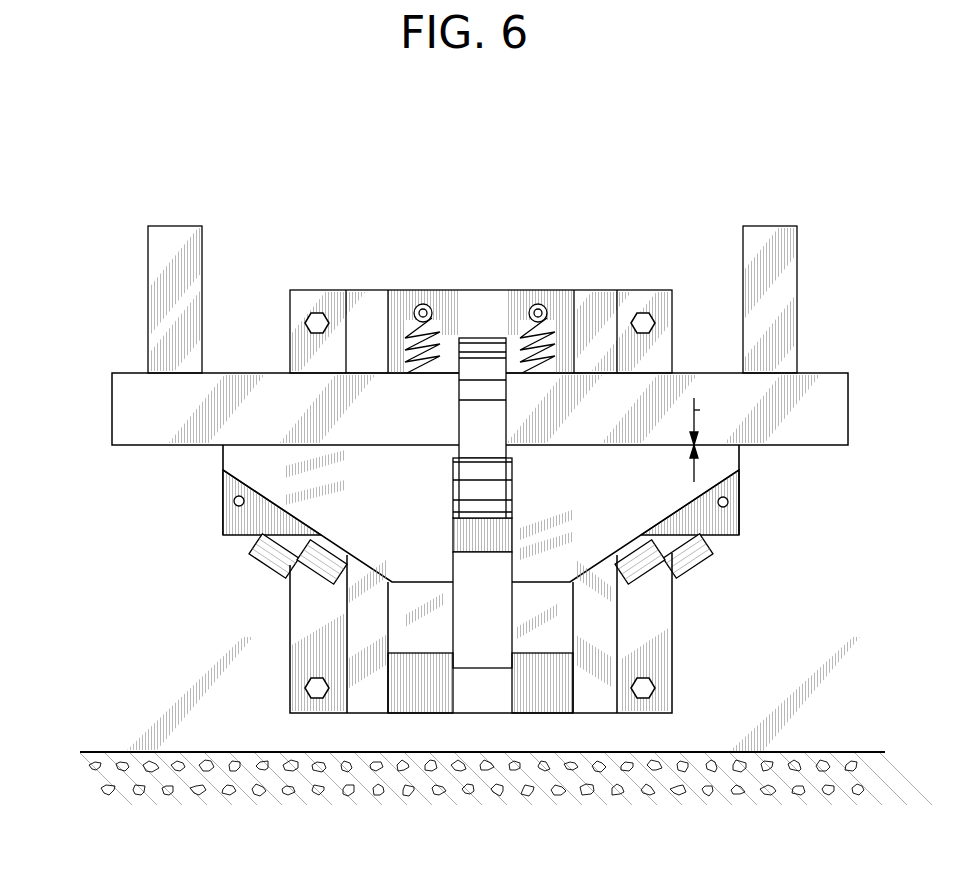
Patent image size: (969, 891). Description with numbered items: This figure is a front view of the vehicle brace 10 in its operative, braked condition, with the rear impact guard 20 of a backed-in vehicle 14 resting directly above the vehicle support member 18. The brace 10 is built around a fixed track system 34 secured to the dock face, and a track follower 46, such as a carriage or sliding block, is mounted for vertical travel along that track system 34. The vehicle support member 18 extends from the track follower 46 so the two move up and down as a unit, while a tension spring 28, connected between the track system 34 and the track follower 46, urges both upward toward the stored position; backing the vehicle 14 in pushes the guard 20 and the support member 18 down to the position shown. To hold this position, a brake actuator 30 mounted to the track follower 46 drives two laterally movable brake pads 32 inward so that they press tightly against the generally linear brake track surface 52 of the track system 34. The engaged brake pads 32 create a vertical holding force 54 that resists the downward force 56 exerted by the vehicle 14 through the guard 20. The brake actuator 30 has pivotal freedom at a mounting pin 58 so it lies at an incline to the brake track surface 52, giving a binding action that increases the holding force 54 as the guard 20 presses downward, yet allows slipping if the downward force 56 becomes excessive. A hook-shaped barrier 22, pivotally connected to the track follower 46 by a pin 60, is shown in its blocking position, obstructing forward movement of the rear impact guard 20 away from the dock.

The vehicle brace 10 is at (126, 571).
The vehicle 14 is at (148, 288).
The vehicle support member 18 is at (223, 456).
The rear impact guard 20 is at (112, 410).
The barrier 22 is at (458, 414).
The tension spring 28 is at (560, 333).
The brake actuator 30 is at (680, 556).
The brake pad 32 is at (620, 582).
The fixed track system 34 is at (362, 290).
The track follower 46 is at (548, 655).
The brake track surface 52 is at (345, 600).
The vertical holding force 54 is at (694, 471).
The downward force 56 is at (700, 410).
The mounting pin 58 is at (234, 501).
The pin 60 is at (452, 492).